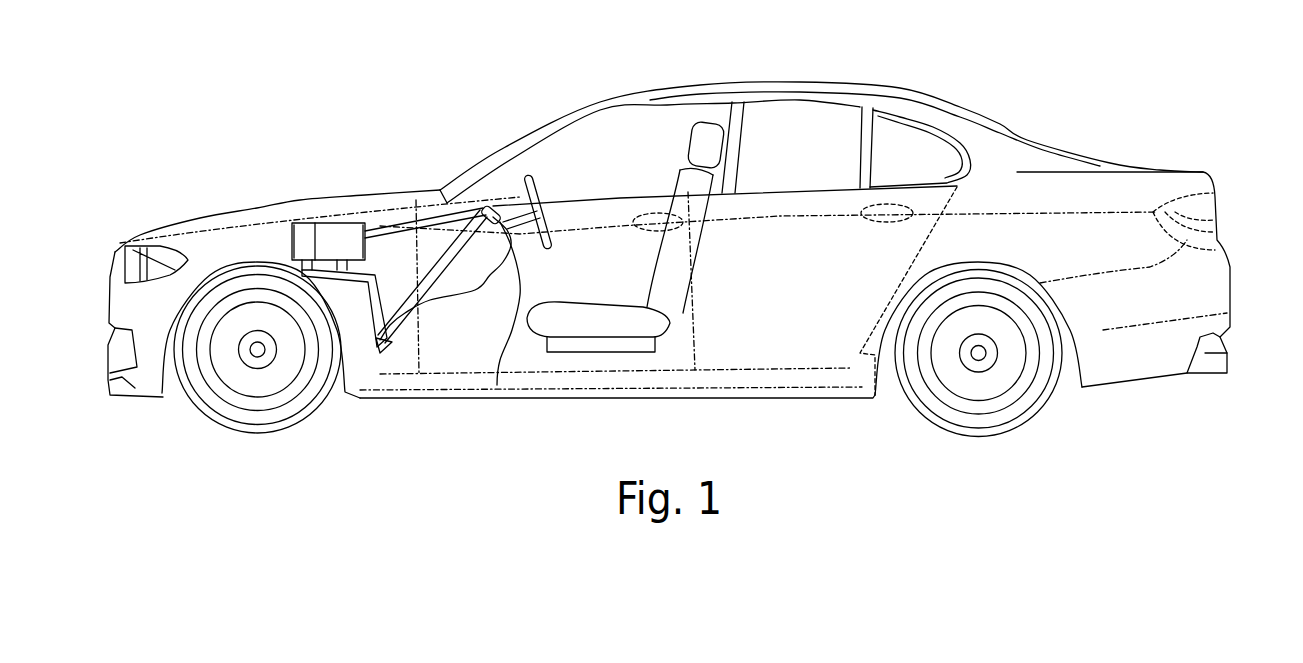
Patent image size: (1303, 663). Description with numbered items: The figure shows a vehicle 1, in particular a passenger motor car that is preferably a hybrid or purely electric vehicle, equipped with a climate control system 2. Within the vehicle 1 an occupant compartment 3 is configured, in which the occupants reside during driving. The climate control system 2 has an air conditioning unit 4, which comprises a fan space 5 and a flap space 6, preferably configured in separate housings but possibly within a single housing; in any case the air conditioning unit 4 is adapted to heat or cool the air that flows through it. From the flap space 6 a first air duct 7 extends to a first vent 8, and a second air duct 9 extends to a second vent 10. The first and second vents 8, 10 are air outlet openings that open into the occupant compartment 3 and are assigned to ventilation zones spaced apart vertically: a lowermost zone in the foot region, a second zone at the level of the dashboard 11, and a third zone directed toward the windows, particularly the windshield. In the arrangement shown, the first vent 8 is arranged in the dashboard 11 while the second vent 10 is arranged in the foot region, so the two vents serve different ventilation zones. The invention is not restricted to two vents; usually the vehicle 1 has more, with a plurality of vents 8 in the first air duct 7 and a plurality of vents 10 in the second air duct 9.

The vehicle 1 is at (378, 124).
The climate control system 2 is at (339, 187).
The occupant compartment 3 is at (628, 133).
The air conditioning unit 4 is at (313, 213).
The fan space 5 is at (306, 238).
The flap space 6 is at (347, 237).
The first air duct 7 is at (416, 200).
The first vent 8 is at (491, 206).
The second air duct 9 is at (366, 312).
The second vent 10 is at (407, 345).
The dashboard 11 is at (497, 385).